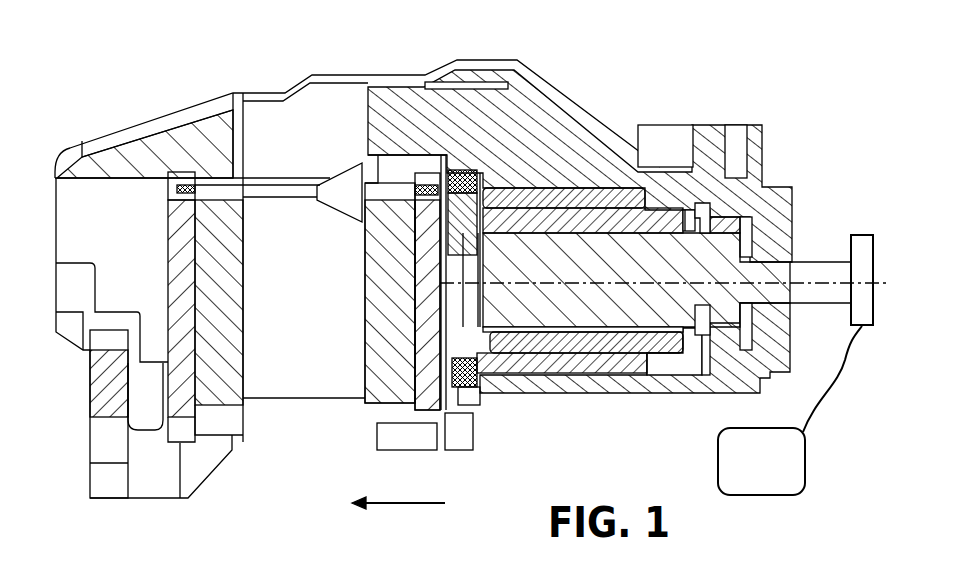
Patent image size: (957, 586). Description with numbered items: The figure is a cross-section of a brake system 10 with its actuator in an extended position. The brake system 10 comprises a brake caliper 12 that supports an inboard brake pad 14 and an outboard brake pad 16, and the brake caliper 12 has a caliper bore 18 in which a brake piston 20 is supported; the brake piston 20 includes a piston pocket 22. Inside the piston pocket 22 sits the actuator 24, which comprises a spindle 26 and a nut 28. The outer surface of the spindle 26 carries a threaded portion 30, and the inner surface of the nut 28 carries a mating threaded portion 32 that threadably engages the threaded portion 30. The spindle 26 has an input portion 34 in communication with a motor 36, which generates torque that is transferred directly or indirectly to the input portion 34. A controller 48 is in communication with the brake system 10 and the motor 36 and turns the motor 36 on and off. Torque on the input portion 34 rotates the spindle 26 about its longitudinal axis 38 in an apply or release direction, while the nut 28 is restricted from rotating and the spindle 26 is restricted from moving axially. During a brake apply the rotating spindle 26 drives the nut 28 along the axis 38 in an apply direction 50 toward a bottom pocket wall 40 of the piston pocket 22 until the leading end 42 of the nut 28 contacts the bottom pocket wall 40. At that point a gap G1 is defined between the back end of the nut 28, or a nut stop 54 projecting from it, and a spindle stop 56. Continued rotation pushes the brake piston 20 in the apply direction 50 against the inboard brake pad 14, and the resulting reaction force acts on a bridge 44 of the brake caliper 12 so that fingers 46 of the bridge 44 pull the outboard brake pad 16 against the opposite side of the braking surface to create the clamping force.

The brake system 10 is at (183, 68).
The brake caliper 12 is at (758, 132).
The inboard brake pad 14 is at (372, 382).
The outboard brake pad 16 is at (240, 382).
The caliper bore 18 is at (665, 368).
The brake piston 20 is at (577, 367).
The piston pocket 22 is at (612, 352).
The actuator 24 is at (629, 228).
The spindle 26 is at (595, 262).
The nut 28 is at (520, 222).
The threaded portion 30 is at (613, 257).
The mating threaded portion 32 is at (550, 227).
The input portion 34 is at (826, 266).
The motor 36 is at (862, 238).
The longitudinal axis 38 is at (520, 283).
The bottom pocket wall 40 is at (492, 220).
The leading end 42 is at (455, 208).
The bridge 44 is at (262, 107).
The fingers 46 is at (150, 382).
The controller 48 is at (790, 410).
The apply direction 50 is at (408, 506).
The nut stop 54 is at (690, 222).
The spindle stop 56 is at (706, 225).
The gap G1 is at (695, 226).